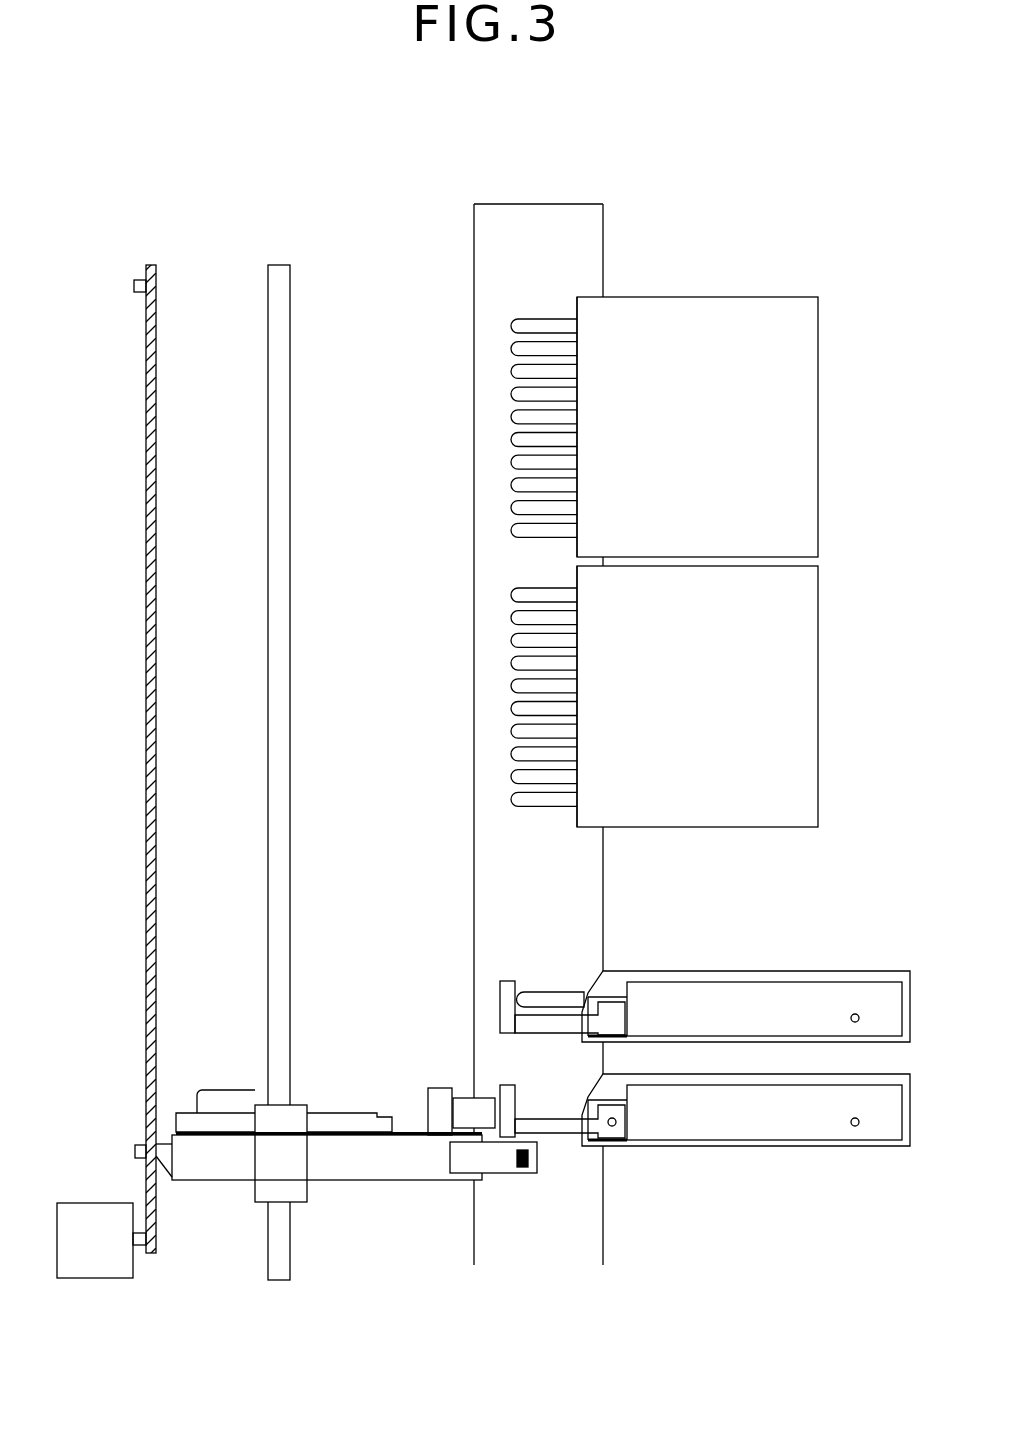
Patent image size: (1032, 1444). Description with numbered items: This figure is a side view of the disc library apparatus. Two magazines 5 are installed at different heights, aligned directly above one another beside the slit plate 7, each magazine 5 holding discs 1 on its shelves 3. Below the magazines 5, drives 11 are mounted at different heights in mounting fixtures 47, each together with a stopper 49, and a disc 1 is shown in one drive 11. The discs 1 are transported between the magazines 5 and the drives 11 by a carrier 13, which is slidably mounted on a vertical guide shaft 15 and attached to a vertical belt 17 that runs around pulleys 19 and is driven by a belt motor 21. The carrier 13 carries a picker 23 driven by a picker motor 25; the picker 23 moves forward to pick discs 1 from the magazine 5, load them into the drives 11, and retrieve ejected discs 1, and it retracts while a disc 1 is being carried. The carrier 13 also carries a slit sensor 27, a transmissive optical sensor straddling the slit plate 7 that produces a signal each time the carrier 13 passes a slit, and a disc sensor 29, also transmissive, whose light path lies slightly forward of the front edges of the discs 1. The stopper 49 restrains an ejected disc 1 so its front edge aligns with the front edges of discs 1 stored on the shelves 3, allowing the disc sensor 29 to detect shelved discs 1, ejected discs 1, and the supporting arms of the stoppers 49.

The disc 1 is at (548, 325).
The shelf 3 is at (573, 300).
The magazine 5 is at (705, 300).
The slit plate 7 is at (540, 223).
The drive 11 is at (608, 980).
The carrier 13 is at (402, 1180).
The vertical guide shaft 15 is at (285, 872).
The vertical belt 17 is at (156, 338).
The pulley 19 is at (135, 280).
The belt motor 21 is at (98, 1205).
The picker 23 is at (340, 1125).
The picker motor 25 is at (232, 1098).
The slit sensor 27 is at (474, 1100).
The disc sensor 29 is at (490, 1162).
The mounting fixture 47 is at (758, 1000).
The stopper 49 is at (541, 1025).